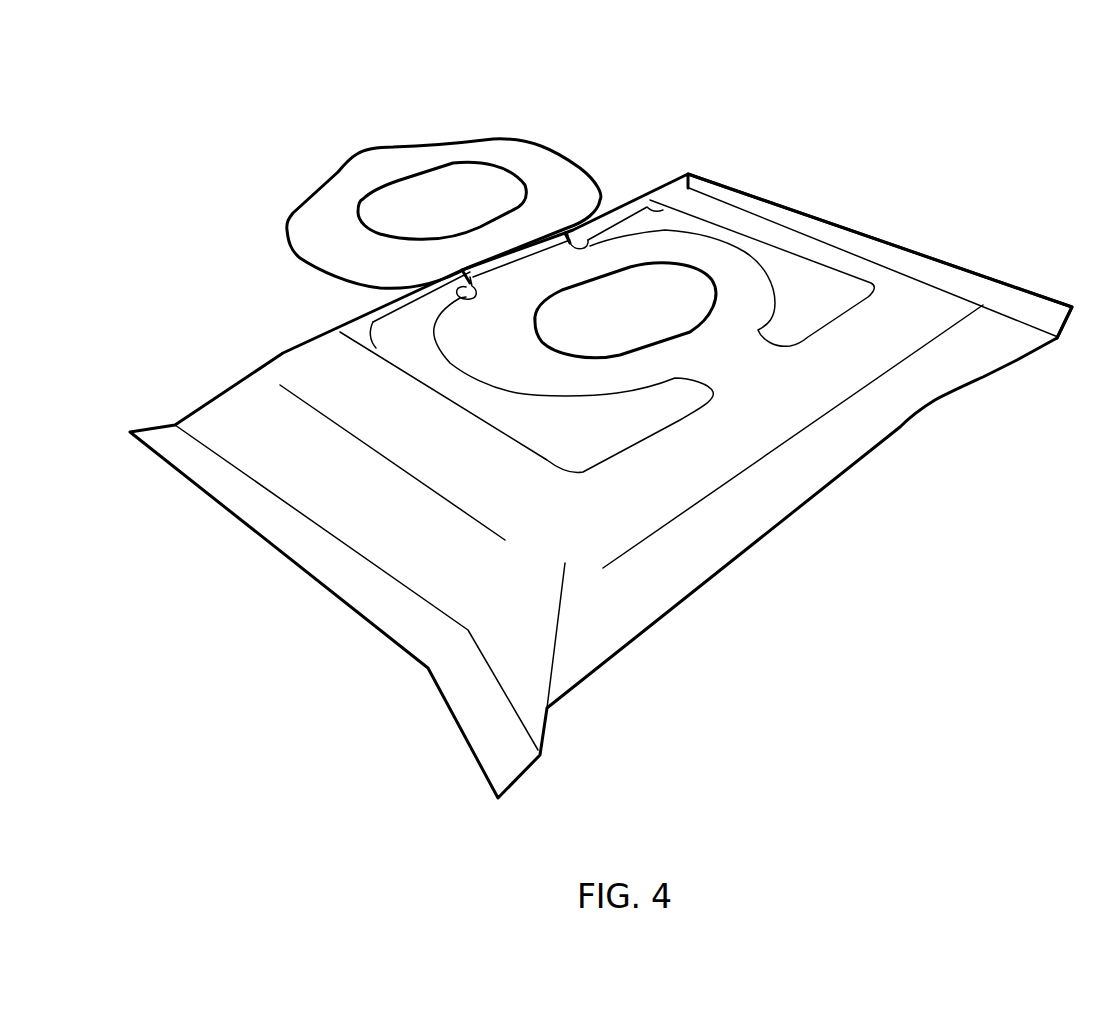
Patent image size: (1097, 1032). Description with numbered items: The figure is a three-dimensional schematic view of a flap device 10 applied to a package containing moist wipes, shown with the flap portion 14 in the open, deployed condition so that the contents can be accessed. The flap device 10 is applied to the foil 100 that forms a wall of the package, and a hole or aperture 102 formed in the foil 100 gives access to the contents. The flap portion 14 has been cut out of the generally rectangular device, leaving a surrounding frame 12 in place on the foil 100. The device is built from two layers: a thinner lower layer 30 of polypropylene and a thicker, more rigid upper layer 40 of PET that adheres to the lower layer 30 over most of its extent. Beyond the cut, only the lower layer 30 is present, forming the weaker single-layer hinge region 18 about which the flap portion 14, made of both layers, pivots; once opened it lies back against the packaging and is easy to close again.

The flap device 10 is at (622, 106).
The frame 12 is at (815, 282).
The flap portion 14 is at (248, 165).
The hinge region 18 is at (393, 300).
The lower layer 30 is at (300, 232).
The upper layer 40 is at (843, 288).
The foil 100 is at (930, 302).
The aperture 102 is at (663, 290).